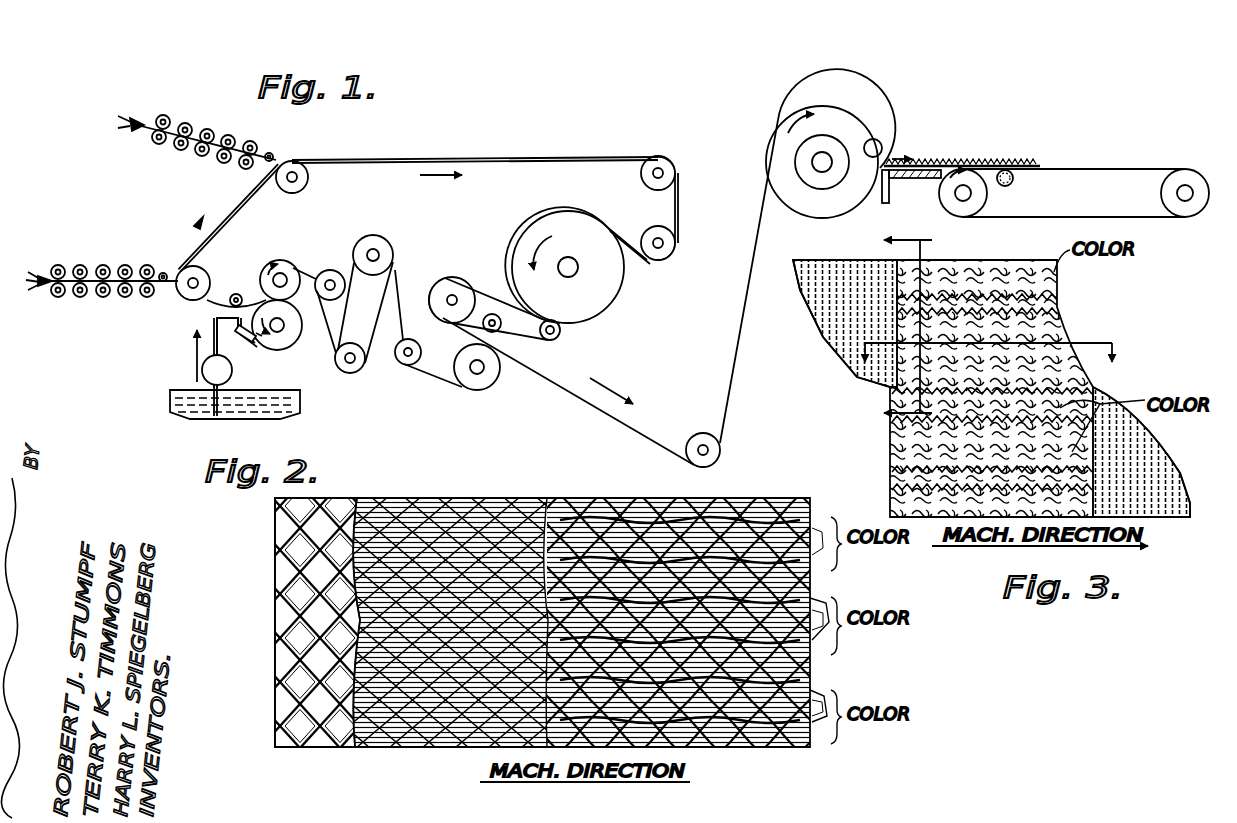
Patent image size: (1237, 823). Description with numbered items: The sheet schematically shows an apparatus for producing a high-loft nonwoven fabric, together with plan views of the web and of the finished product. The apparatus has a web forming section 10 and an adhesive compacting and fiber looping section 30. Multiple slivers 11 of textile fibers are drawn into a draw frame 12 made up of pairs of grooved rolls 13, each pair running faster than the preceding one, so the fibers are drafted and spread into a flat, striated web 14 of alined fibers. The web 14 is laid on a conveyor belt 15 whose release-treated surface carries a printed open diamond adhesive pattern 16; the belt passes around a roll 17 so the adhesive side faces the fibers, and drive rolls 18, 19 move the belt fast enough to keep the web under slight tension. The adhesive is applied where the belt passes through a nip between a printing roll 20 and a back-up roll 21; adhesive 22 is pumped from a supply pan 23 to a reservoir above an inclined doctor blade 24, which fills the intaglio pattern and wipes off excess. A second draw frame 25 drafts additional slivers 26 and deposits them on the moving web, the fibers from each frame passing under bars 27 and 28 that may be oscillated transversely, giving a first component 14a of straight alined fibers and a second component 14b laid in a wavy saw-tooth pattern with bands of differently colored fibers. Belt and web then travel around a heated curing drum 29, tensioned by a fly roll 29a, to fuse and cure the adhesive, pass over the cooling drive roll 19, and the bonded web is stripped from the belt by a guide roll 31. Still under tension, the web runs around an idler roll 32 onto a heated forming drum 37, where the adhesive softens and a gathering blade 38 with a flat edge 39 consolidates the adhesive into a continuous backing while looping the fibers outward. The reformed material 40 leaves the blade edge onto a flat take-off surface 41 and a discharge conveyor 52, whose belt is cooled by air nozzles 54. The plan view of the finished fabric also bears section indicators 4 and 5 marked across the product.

In FIG. 1, the web forming section 10 is at (451, 128).
In FIG. 1, the slivers 11 is at (47, 288).
In FIG. 1, the draw frame 12 is at (85, 257).
In FIG. 1, the grooved rolls 13 is at (80, 297).
In FIG. 1, the web 14 is at (227, 204).
In FIG. 2, the web 14 is at (484, 760).
In FIG. 1, the first component of the web 14a is at (147, 297).
In FIG. 2, the first component of the web 14a is at (437, 510).
In FIG. 1, the second component of the web 14b is at (280, 158).
In FIG. 2, the second component of the web 14b is at (657, 527).
In FIG. 1, the conveyor belt 15 is at (221, 233).
In FIG. 2, the conveyor belt 15 is at (297, 647).
In FIG. 1, the adhesive pattern 16 is at (198, 303).
In FIG. 3, the adhesive pattern 16 is at (830, 340).
In FIG. 2, the adhesive pattern 16 is at (275, 612).
In FIG. 1, the roll 17 is at (204, 270).
In FIG. 1, the drive roll 18 is at (475, 391).
In FIG. 1, the drive roll 19 is at (442, 287).
In FIG. 1, the printing roll 20 is at (292, 342).
In FIG. 1, the back-up roll 21 is at (283, 262).
In FIG. 1, the adhesive 22 is at (285, 413).
In FIG. 1, the supply pan 23 is at (190, 423).
In FIG. 1, the doctor blade 24 is at (254, 346).
In FIG. 1, the second draw frame 25 is at (189, 113).
In FIG. 1, the slivers 26 is at (140, 124).
In FIG. 1, the bar 27 is at (170, 276).
In FIG. 1, the bar 28 is at (283, 130).
In FIG. 1, the curing drum 29 is at (603, 290).
In FIG. 1, the fly roll 29a is at (561, 334).
In FIG. 1, the adhesive compacting and fiber looping section 30 is at (936, 122).
In FIG. 1, the guide roll 31 is at (496, 330).
In FIG. 1, the idler roll 32 is at (722, 447).
In FIG. 1, the forming drum 37 is at (828, 116).
In FIG. 1, the gathering blade 38 is at (884, 205).
In FIG. 1, the flat edge 39 is at (877, 141).
In FIG. 1, the reformed and consolidated material 40 is at (972, 160).
In FIG. 3, the reformed and consolidated material 40 is at (1072, 318).
In FIG. 1, the take-off surface 41 is at (926, 180).
In FIG. 1, the discharge conveyor 52 is at (975, 215).
In FIG. 1, the air nozzles 54 is at (1016, 183).
In FIG. 3, the section line 4- 4 is at (918, 325).
In FIG. 3, the section line 5- 5 is at (985, 337).